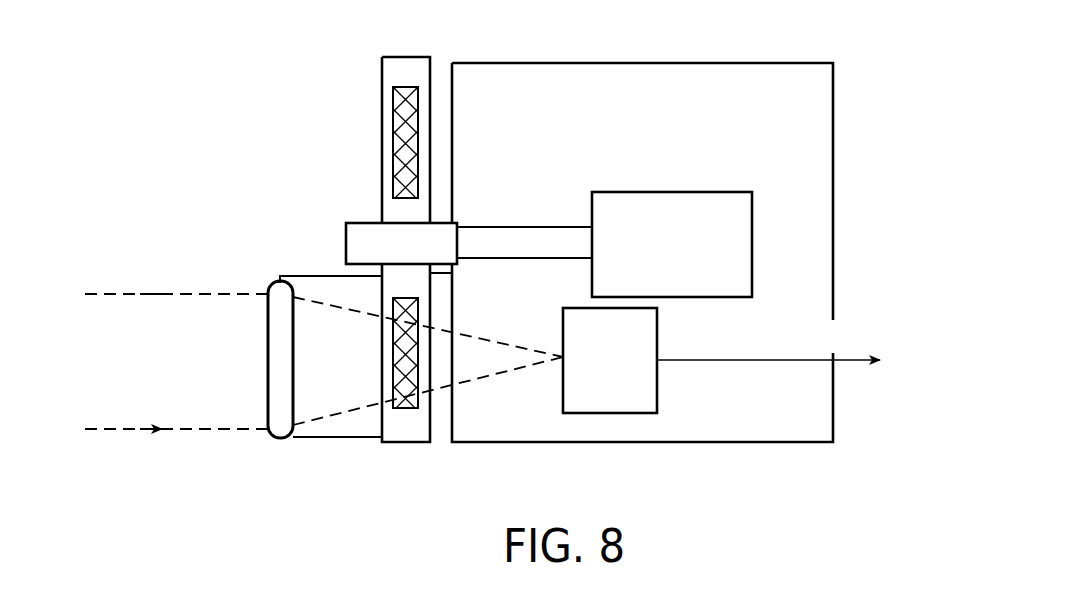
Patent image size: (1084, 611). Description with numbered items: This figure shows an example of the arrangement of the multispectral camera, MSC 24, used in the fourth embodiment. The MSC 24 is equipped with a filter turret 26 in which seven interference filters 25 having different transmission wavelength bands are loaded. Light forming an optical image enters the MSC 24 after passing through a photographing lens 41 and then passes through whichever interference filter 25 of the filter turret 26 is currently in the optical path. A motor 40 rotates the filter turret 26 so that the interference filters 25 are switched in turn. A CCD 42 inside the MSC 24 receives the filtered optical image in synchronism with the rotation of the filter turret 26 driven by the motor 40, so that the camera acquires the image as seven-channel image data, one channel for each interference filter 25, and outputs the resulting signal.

The multispectral camera (MSC) 24 is at (834, 218).
The interference filter 25 is at (393, 160).
The filter turret 26 is at (420, 57).
The motor 40 is at (668, 192).
The photographing lens 41 is at (313, 440).
The CCD 42 is at (657, 390).